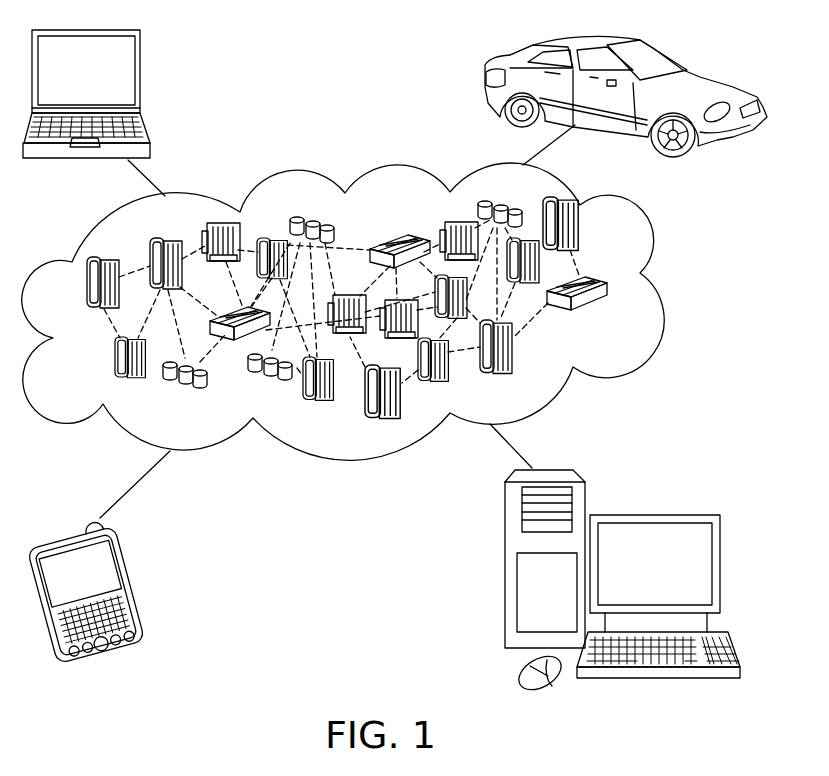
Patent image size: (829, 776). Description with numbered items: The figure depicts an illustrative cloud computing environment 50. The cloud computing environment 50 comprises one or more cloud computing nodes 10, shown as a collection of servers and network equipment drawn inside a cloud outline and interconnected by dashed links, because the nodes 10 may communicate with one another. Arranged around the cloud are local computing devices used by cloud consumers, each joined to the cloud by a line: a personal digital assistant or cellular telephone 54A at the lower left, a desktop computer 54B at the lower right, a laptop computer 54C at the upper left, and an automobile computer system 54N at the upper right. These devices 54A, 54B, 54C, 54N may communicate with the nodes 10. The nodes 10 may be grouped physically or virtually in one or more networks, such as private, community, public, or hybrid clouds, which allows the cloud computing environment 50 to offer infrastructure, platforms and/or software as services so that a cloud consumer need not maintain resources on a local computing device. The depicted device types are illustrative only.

The cloud computing nodes 10 is at (657, 302).
The cloud computing environment 50 is at (655, 290).
The personal digital assistant or cellular telephone 54A is at (133, 585).
The desktop computer 54B is at (653, 515).
The laptop computer 54C is at (143, 78).
The automobile computer system 54N is at (482, 95).